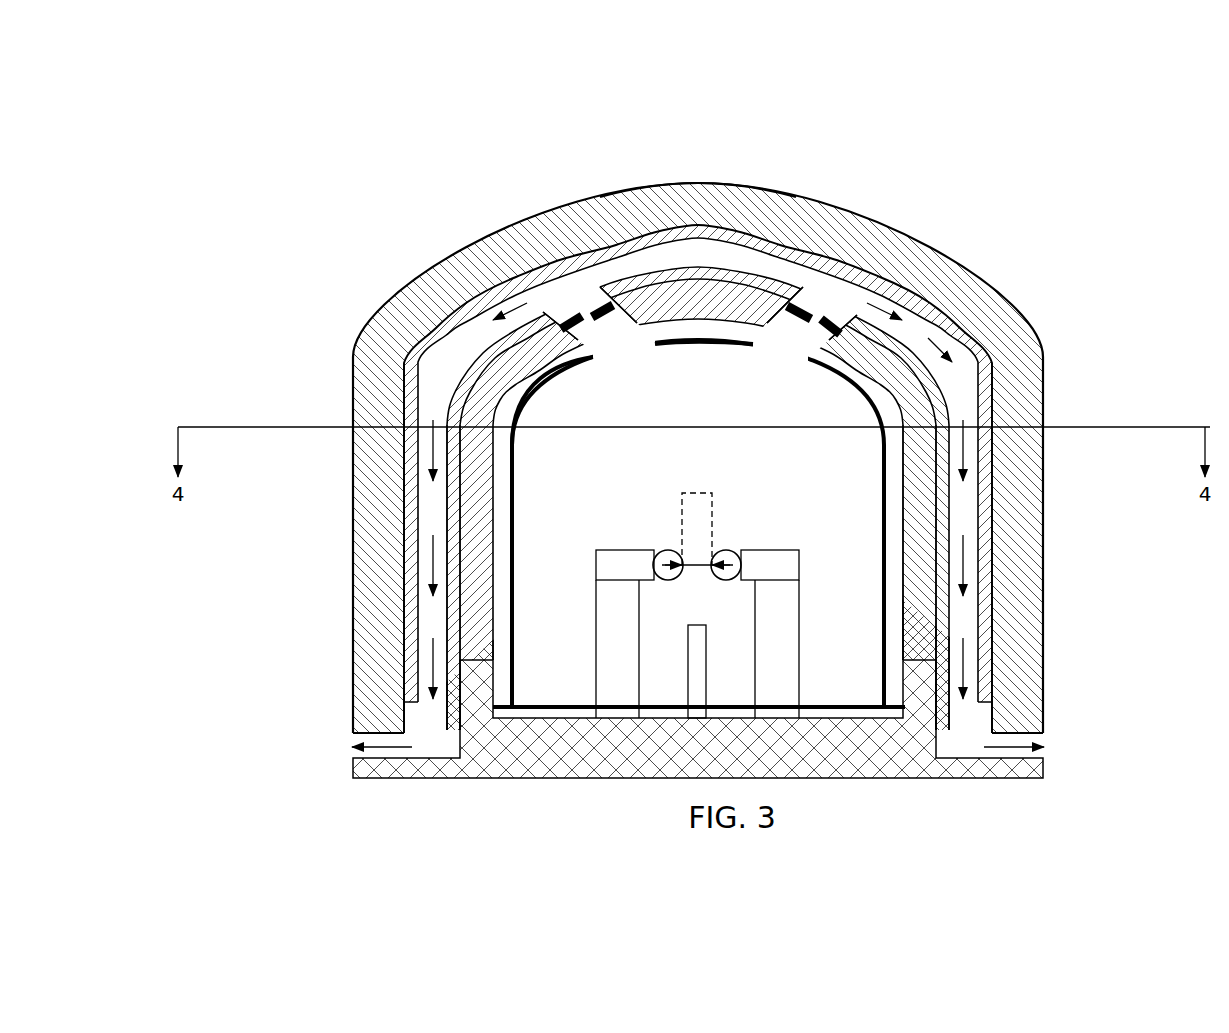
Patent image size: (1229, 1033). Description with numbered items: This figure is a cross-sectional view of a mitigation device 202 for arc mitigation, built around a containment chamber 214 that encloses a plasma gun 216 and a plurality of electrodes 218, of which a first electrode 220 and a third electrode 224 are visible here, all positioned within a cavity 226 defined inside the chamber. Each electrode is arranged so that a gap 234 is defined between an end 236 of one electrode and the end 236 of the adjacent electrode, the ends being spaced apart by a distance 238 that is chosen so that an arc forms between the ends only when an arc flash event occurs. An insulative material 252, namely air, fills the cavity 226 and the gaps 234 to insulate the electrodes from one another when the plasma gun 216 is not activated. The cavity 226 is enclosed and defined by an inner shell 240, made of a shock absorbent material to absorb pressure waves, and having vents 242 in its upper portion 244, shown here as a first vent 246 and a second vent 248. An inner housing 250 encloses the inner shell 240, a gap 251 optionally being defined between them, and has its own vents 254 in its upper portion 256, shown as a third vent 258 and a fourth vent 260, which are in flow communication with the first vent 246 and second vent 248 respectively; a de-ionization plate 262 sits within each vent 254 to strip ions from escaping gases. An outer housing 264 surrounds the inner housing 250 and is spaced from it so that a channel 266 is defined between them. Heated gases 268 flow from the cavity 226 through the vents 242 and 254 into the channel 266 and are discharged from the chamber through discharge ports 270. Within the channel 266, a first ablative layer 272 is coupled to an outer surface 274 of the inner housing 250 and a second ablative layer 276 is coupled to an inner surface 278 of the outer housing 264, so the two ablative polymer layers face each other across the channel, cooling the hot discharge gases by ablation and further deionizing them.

The mitigation device 202 is at (1044, 170).
The containment chamber 214 is at (992, 290).
The plasma gun 216 is at (706, 682).
The electrodes 218 is at (585, 637).
The first electrode 220 is at (596, 593).
The third electrode 224 is at (800, 602).
The cavity 226 is at (785, 476).
The gap 234 is at (697, 571).
The end 236 is at (664, 550).
The distance 238 is at (697, 518).
The inner shell 240 is at (902, 335).
The vents 242 is at (641, 354).
The upper portion 244 is at (632, 399).
The first vent 246 is at (612, 354).
The second vent 248 is at (769, 349).
The inner housing 250 is at (923, 532).
The gap 251 is at (886, 610).
The insulative material 252 is at (682, 618).
The vents 254 is at (592, 298).
The upper portion 256 is at (777, 268).
The third vent 258 is at (556, 300).
The fourth vent 260 is at (829, 306).
The de-ionization plate 262 is at (566, 318).
The outer housing 264 is at (682, 181).
The channel 266 is at (680, 264).
The gases 268 is at (441, 362).
The discharge ports 270 is at (336, 745).
The first ablative layer 272 is at (700, 498).
The outer surface 274 is at (452, 518).
The second ablative layer 276 is at (410, 483).
The inner surface 278 is at (448, 462).